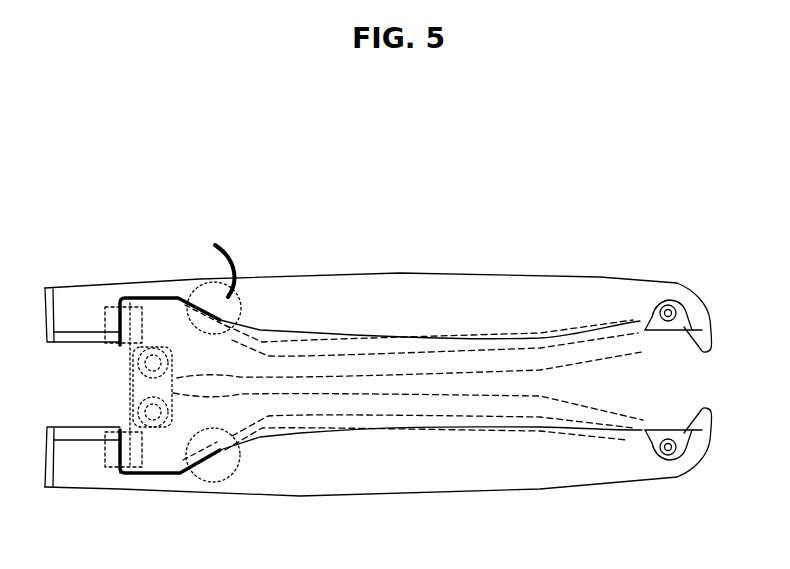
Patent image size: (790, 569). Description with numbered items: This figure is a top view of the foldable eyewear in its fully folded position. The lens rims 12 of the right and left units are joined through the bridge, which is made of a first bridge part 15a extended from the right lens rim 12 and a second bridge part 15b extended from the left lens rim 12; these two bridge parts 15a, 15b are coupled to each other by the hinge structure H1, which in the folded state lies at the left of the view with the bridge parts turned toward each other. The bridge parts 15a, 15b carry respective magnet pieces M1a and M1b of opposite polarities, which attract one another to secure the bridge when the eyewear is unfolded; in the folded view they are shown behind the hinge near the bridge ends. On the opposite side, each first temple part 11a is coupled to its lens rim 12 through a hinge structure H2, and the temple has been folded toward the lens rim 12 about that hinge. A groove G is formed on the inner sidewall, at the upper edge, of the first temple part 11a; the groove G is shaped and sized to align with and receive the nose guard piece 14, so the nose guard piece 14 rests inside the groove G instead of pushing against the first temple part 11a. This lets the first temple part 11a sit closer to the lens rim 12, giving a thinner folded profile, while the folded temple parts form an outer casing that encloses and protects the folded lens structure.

The first temple part 11a is at (358, 300).
The lens rim 12 is at (477, 402).
The nose guard piece 14 is at (237, 332).
The bridge part 15a is at (183, 436).
The bridge part 15b is at (183, 340).
The hinge structure H1 is at (138, 380).
The hinge structure H2 is at (660, 327).
The magnet piece M1a is at (135, 462).
The magnet piece M1b is at (130, 303).
The groove G is at (222, 251).